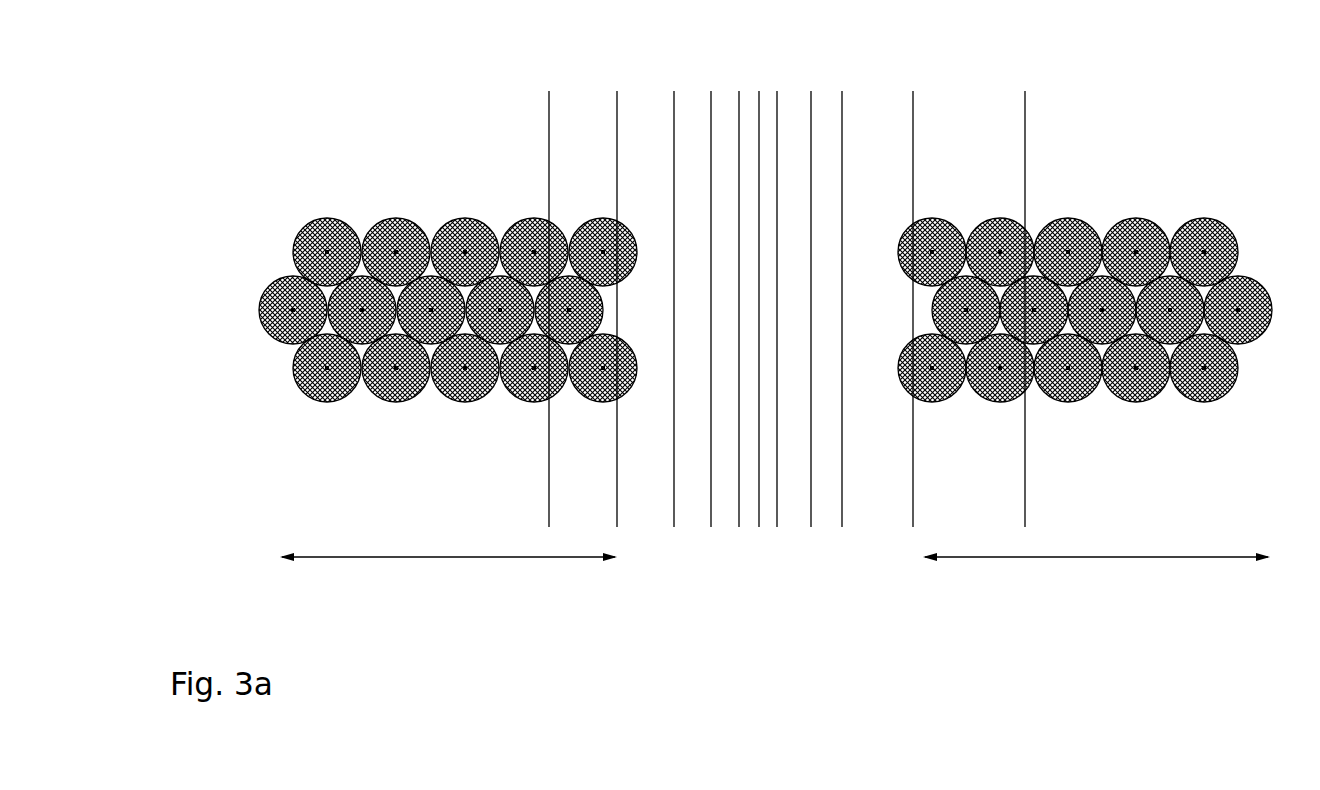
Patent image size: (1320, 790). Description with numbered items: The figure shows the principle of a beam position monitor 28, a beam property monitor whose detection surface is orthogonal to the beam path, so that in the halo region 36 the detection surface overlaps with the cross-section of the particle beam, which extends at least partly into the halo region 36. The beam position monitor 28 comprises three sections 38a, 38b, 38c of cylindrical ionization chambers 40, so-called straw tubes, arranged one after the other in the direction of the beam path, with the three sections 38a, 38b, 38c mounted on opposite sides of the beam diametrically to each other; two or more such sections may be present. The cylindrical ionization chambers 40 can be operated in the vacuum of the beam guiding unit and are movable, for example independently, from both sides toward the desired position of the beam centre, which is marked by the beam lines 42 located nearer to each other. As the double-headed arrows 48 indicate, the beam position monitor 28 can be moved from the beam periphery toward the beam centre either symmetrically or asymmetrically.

The beam position monitor 28 is at (298, 136).
The halo region 36 is at (637, 583).
The first section of cylindrical ionization chambers 38a is at (272, 254).
The second section of cylindrical ionization chambers 38b is at (237, 312).
The third section of cylindrical ionization chambers 38c is at (272, 371).
The cylindrical ionization chamber 40 is at (1137, 218).
The beam lines 42 is at (1026, 157).
The double-headed arrows 48 is at (370, 556).